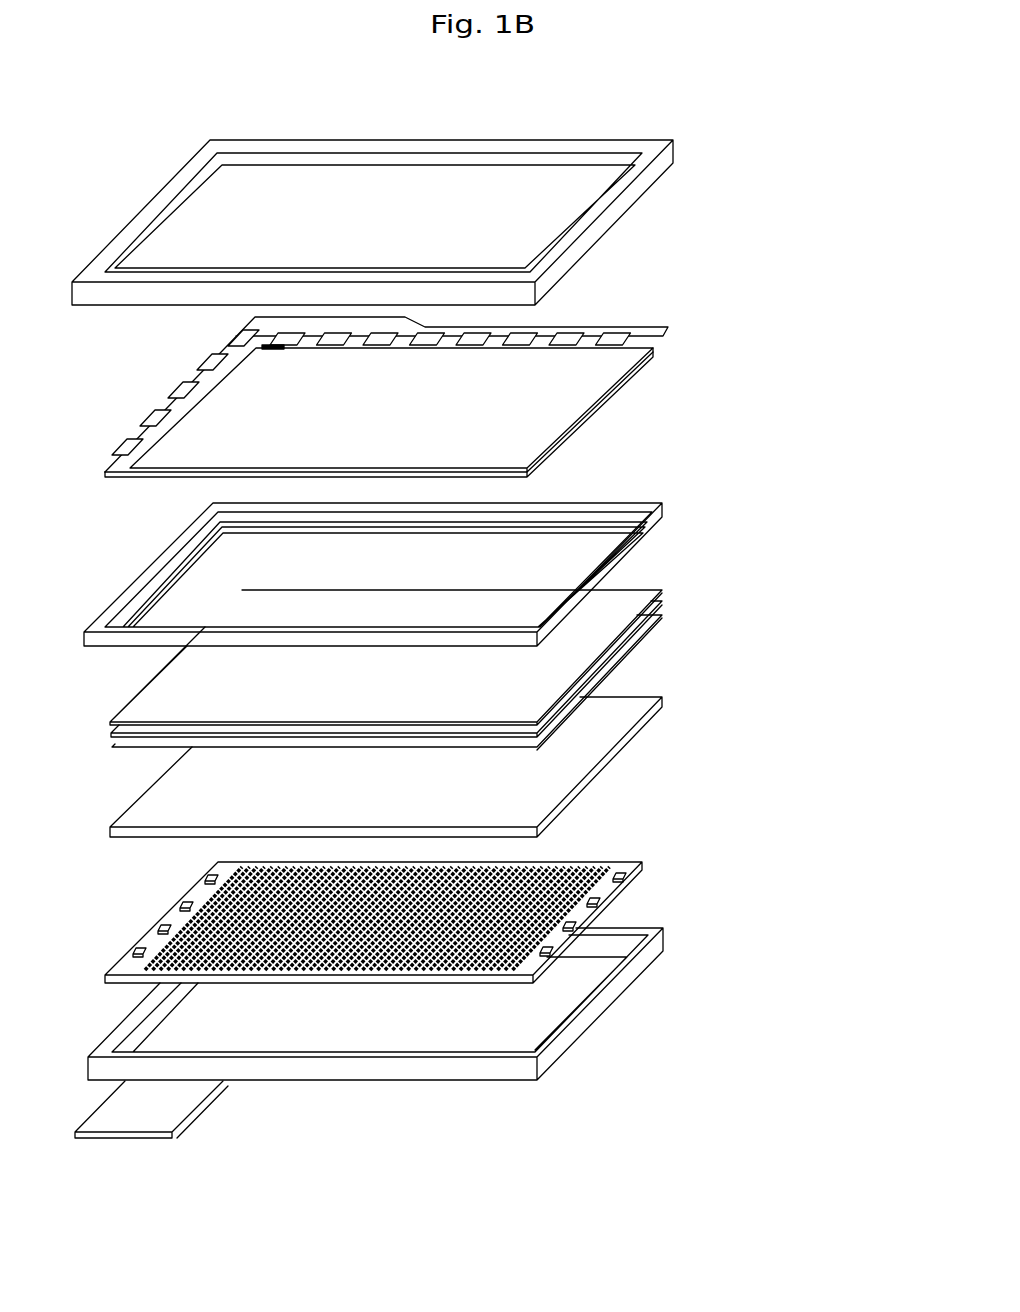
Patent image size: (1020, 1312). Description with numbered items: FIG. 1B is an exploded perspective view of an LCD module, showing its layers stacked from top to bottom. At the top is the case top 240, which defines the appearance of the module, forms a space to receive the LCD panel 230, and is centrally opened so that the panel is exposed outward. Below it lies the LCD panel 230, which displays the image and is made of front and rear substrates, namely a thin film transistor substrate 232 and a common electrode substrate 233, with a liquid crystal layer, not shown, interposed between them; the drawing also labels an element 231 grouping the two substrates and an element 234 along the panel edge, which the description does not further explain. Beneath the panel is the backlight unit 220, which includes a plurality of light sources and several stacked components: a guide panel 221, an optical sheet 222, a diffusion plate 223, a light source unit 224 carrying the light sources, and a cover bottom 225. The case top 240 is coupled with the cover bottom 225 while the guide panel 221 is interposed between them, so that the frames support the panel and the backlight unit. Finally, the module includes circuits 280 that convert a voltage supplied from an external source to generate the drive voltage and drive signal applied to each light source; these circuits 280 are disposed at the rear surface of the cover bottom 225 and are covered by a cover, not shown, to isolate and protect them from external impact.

The case top 240 is at (665, 158).
The LCD panel 230 is at (432, 400).
The display panel 231 is at (443, 410).
The thin film transistor substrate 232 is at (653, 343).
The common electrode substrate 233 is at (632, 368).
The flexible printed circuit board with driving pads 234 is at (262, 355).
The backlight unit 220 is at (449, 790).
The guide panel 221 is at (662, 510).
The optical sheet 222 is at (667, 590).
The diffusion plate 223 is at (662, 703).
The light source unit 224 is at (633, 862).
The cover bottom 225 is at (414, 1003).
The circuits 280 is at (118, 1117).